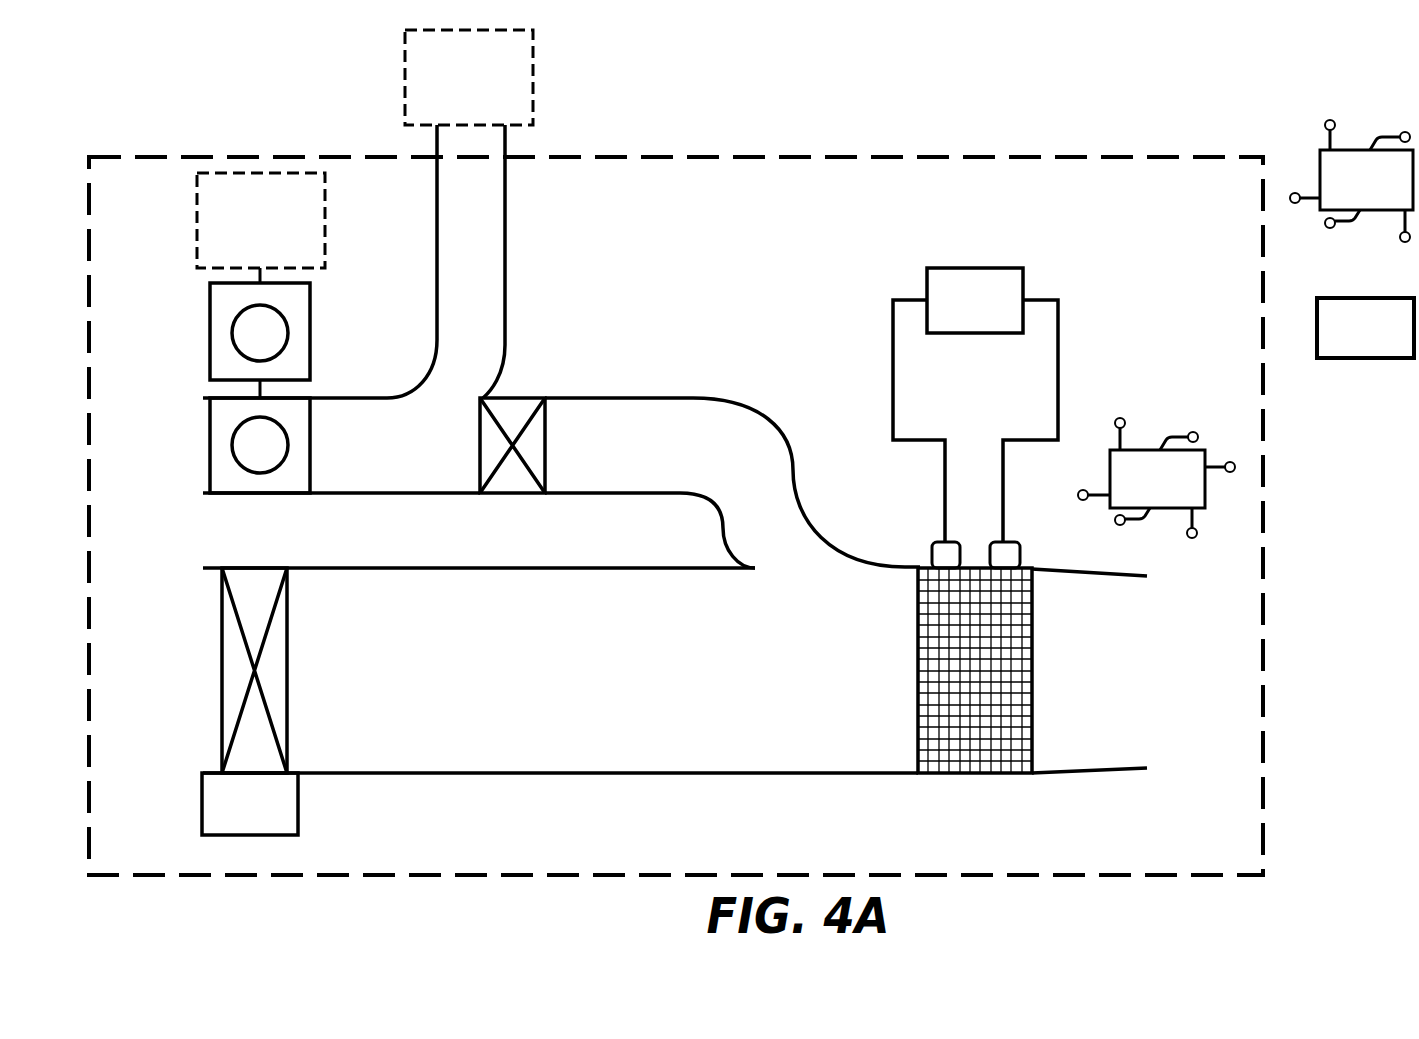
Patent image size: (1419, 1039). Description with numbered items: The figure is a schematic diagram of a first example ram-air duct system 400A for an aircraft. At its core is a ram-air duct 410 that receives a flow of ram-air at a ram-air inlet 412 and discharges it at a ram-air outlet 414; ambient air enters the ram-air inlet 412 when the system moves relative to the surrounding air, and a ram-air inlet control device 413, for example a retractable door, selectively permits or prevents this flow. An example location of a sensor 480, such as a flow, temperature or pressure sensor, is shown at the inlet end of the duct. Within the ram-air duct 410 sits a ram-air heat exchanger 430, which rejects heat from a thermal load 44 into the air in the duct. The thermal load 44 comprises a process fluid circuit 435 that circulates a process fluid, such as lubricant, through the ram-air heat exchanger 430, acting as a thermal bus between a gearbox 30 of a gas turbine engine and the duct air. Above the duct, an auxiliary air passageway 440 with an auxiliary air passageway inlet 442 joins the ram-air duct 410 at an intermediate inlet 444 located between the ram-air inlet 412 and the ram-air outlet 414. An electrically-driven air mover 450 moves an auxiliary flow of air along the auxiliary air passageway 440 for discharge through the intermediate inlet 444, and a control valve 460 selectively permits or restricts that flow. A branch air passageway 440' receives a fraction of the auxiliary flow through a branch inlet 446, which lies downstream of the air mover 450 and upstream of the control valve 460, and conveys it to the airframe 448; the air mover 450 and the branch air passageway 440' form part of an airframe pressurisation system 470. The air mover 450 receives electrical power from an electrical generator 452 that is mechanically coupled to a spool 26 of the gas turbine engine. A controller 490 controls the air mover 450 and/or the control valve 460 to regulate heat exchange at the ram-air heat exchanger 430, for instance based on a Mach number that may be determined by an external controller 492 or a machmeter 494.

The ram-air duct system 400A is at (1187, 861).
The airframe pressurisation system 470 is at (172, 242).
The spool 26 is at (245, 237).
The electrical generator 452 is at (210, 336).
The air mover 450 is at (262, 494).
The auxiliary air passageway inlet 442 is at (193, 398).
The auxiliary air passageway 440 is at (561, 483).
The branch air passageway 440' is at (446, 261).
The airframe 448 is at (445, 92).
The branch inlet 446 is at (472, 398).
The control valve 460 is at (500, 494).
The intermediate inlet 444 is at (877, 570).
The thermal load 44 is at (890, 268).
The gearbox 30 is at (975, 300).
The process fluid circuit 435 is at (1058, 373).
The controller 490 is at (1134, 494).
The external controller 492 is at (1344, 194).
The machmeter 494 is at (1342, 342).
The ram-air duct 410 is at (337, 634).
The ram-air inlet 412 is at (193, 568).
The ram-air inlet control device 413 is at (287, 730).
The ram-air outlet 414 is at (1153, 575).
The ram-air heat exchanger 430 is at (972, 775).
The sensor 480 is at (227, 819).